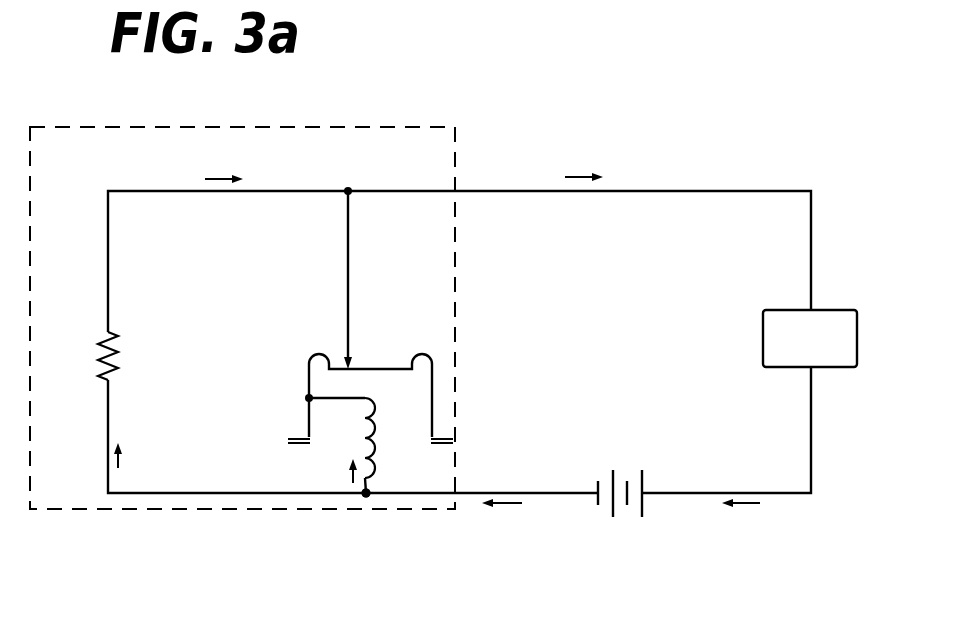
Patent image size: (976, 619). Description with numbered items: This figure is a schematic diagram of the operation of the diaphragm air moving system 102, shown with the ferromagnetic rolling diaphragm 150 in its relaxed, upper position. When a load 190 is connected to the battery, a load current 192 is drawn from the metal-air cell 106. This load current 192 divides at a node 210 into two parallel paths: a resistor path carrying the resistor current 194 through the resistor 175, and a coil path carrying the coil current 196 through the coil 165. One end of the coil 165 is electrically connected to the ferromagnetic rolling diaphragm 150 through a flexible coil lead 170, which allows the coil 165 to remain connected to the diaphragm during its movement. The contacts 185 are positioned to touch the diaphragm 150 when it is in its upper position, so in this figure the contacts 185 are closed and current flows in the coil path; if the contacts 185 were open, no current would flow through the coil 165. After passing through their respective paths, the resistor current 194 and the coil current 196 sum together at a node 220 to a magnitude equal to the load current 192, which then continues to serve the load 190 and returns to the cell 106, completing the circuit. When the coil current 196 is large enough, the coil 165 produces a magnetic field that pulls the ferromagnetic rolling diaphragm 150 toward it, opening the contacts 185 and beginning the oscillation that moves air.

The diaphragm air moving system 102 is at (421, 104).
The metal-air cell 106 is at (617, 511).
The ferromagnetic rolling diaphragm 150 is at (380, 368).
The coil 165 is at (378, 448).
The flexible coil lead 170 is at (309, 399).
The resistor 175 is at (118, 358).
The contacts 185 is at (357, 361).
The load 190 is at (763, 340).
The load current 192 is at (566, 180).
The resistor current 194 is at (207, 181).
The coil current 196 is at (358, 480).
The node 210 is at (364, 511).
The node 220 is at (353, 176).